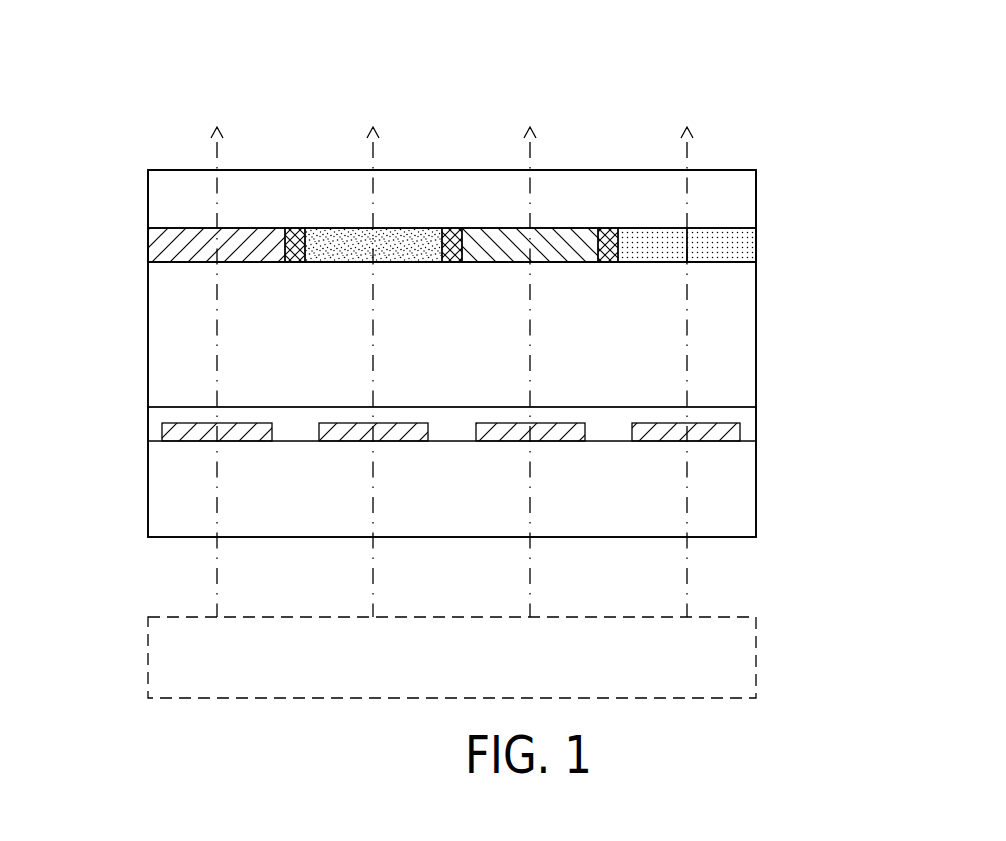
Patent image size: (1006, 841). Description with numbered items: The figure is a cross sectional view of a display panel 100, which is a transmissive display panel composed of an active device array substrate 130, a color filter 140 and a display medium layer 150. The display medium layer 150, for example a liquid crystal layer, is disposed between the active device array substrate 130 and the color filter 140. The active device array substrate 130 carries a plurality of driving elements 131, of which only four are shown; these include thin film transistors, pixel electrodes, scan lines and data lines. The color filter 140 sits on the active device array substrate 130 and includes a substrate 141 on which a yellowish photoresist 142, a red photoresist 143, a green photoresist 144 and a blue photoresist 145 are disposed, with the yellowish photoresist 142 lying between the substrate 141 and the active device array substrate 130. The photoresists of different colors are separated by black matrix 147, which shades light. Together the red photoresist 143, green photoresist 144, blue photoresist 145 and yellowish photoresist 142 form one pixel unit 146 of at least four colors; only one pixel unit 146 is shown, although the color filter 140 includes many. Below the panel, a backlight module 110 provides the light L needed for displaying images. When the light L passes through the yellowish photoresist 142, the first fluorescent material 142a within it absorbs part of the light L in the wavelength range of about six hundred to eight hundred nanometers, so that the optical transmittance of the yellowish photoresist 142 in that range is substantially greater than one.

The display panel 100 is at (972, 677).
The backlight module 110 is at (737, 655).
The active device array substrate 130 is at (762, 407).
The driving elements 131 is at (173, 432).
The color filter 140 is at (762, 170).
The substrate 141 is at (157, 198).
The yellowish photoresist 142 is at (718, 242).
The first fluorescent material 142a is at (721, 245).
The red photoresist 143 is at (570, 242).
The green photoresist 144 is at (408, 242).
The blue photoresist 145 is at (255, 242).
The pixel unit 146 is at (815, 68).
The black matrix 147 is at (613, 238).
The display medium layer 150 is at (740, 348).
The light L is at (687, 564).